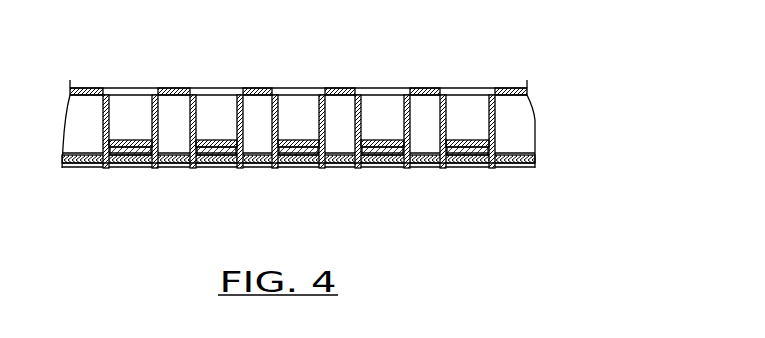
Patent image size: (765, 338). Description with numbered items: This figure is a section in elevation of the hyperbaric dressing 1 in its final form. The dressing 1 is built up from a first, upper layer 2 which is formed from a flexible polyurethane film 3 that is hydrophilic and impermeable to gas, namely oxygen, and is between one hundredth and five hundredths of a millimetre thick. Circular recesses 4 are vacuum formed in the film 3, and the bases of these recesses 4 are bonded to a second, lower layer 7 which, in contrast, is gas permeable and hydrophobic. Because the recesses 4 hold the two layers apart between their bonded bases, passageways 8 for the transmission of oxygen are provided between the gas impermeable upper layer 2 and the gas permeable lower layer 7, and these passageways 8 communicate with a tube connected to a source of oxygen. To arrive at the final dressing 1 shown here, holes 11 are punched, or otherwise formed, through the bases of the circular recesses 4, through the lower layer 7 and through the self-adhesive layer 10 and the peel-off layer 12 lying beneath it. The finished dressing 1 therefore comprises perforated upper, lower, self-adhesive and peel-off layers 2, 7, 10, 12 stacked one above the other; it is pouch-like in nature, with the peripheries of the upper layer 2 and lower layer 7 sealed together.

The hyperbaric dressing 1 is at (555, 92).
The first, upper layer 2 is at (460, 79).
The polyurethane film 3 is at (127, 88).
The circular recesses 4 is at (72, 167).
The second, lower layer 7 is at (157, 167).
The passageways 8 is at (205, 88).
The self-adhesive layer 10 is at (178, 168).
The holes 11 is at (226, 167).
The peel-off layer 12 is at (537, 158).